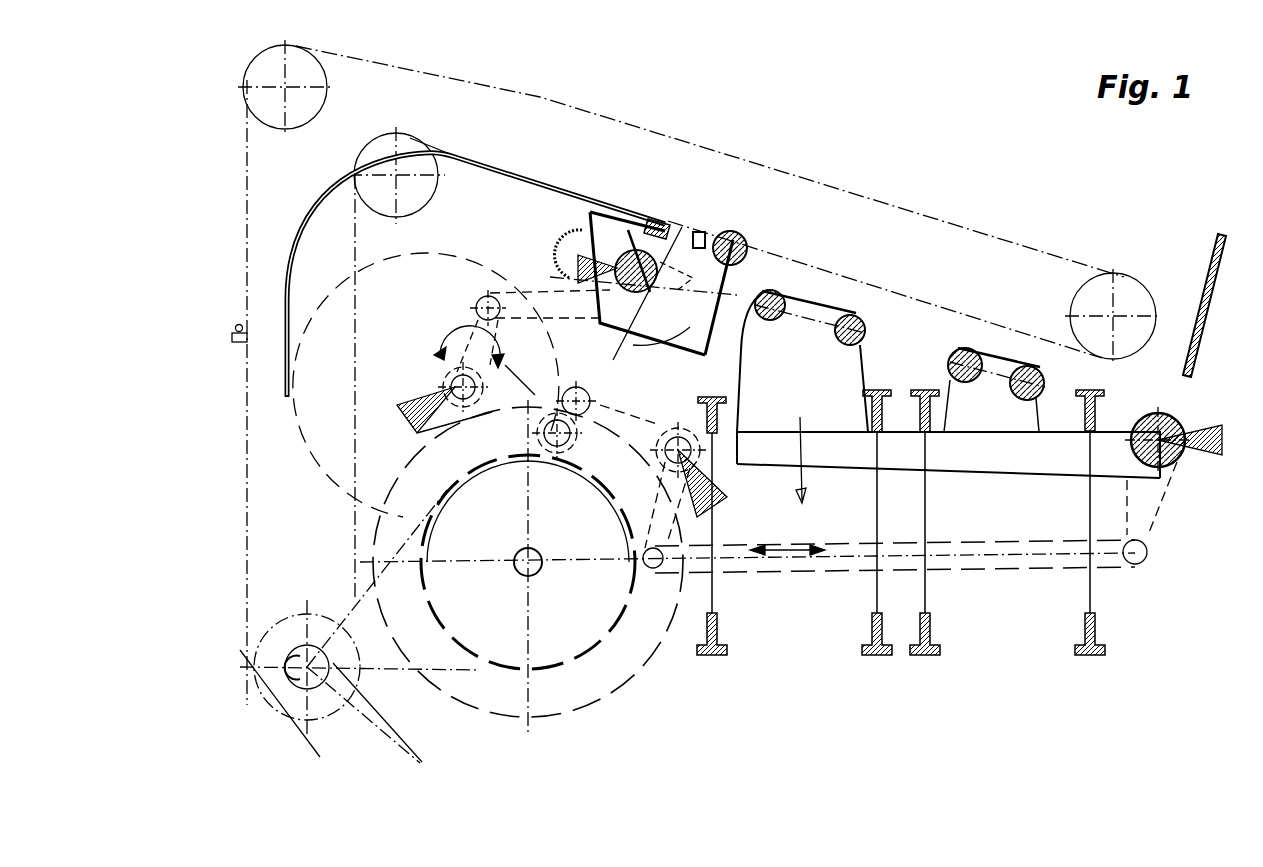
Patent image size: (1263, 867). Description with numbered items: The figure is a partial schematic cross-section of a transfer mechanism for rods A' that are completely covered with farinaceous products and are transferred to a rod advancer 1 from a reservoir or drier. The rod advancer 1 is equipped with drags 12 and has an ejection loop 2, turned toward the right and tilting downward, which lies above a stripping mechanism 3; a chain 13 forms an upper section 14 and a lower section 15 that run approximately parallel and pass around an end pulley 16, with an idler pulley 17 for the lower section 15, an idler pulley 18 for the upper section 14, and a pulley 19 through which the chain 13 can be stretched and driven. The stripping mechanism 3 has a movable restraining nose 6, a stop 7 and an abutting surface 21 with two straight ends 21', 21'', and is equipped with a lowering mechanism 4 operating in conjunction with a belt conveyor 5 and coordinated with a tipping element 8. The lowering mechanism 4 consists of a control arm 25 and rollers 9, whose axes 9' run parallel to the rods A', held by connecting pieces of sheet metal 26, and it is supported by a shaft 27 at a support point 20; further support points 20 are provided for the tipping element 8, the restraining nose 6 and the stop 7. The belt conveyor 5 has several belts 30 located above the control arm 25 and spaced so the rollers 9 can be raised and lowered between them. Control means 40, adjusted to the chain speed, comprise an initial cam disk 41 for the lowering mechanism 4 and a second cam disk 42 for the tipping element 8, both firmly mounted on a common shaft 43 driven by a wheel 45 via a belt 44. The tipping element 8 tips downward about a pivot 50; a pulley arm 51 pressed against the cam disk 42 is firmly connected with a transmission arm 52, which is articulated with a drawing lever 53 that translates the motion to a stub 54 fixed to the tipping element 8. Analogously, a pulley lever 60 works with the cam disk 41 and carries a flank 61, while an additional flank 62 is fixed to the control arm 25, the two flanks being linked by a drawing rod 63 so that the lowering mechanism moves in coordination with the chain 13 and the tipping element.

The rod advancer 1 is at (245, 194).
The ejection loop 2 is at (668, 148).
The stripping mechanism 3 is at (740, 317).
The lowering mechanism 4 is at (838, 413).
The belt conveyor 5 is at (1093, 590).
The restraining nose 6 is at (683, 228).
The stop 7 is at (1200, 336).
The tipping element 8 is at (723, 303).
The roller 9 is at (810, 341).
The axes 9' is at (768, 247).
The drags 12 is at (236, 342).
The chain 13 is at (545, 97).
The upper section 14 is at (1035, 245).
The lower section 15 is at (920, 298).
The end pulley 16 is at (1135, 283).
The idler pulley 17 is at (415, 200).
The idler pulley 18 is at (250, 78).
The pulley 19 is at (270, 700).
The support points 20 is at (578, 270).
The abutting surface 21 is at (476, 221).
The straight end 21' is at (635, 153).
The straight end 21'' is at (313, 348).
The control arm 25 is at (1018, 464).
The connecting pieces of sheet metal 26 is at (838, 381).
The shaft 27 is at (1178, 462).
The belts 30 is at (714, 366).
The control means 40 is at (393, 670).
The initial cam disk 41 is at (430, 433).
The second cam disk 42 is at (405, 520).
The common shaft 43 is at (537, 573).
The belt 44 is at (473, 677).
The wheel 45 is at (298, 660).
The pivot 50 is at (657, 262).
The pulley arm 51 is at (510, 393).
The transmission arm 52 is at (476, 312).
The drawing lever 53 is at (513, 296).
The stub 54 is at (563, 408).
The pulley lever 60 is at (640, 420).
The flank 61 is at (667, 528).
The flank 62 is at (1150, 527).
The drawing rod 63 is at (853, 556).
The rods A' is at (222, 324).